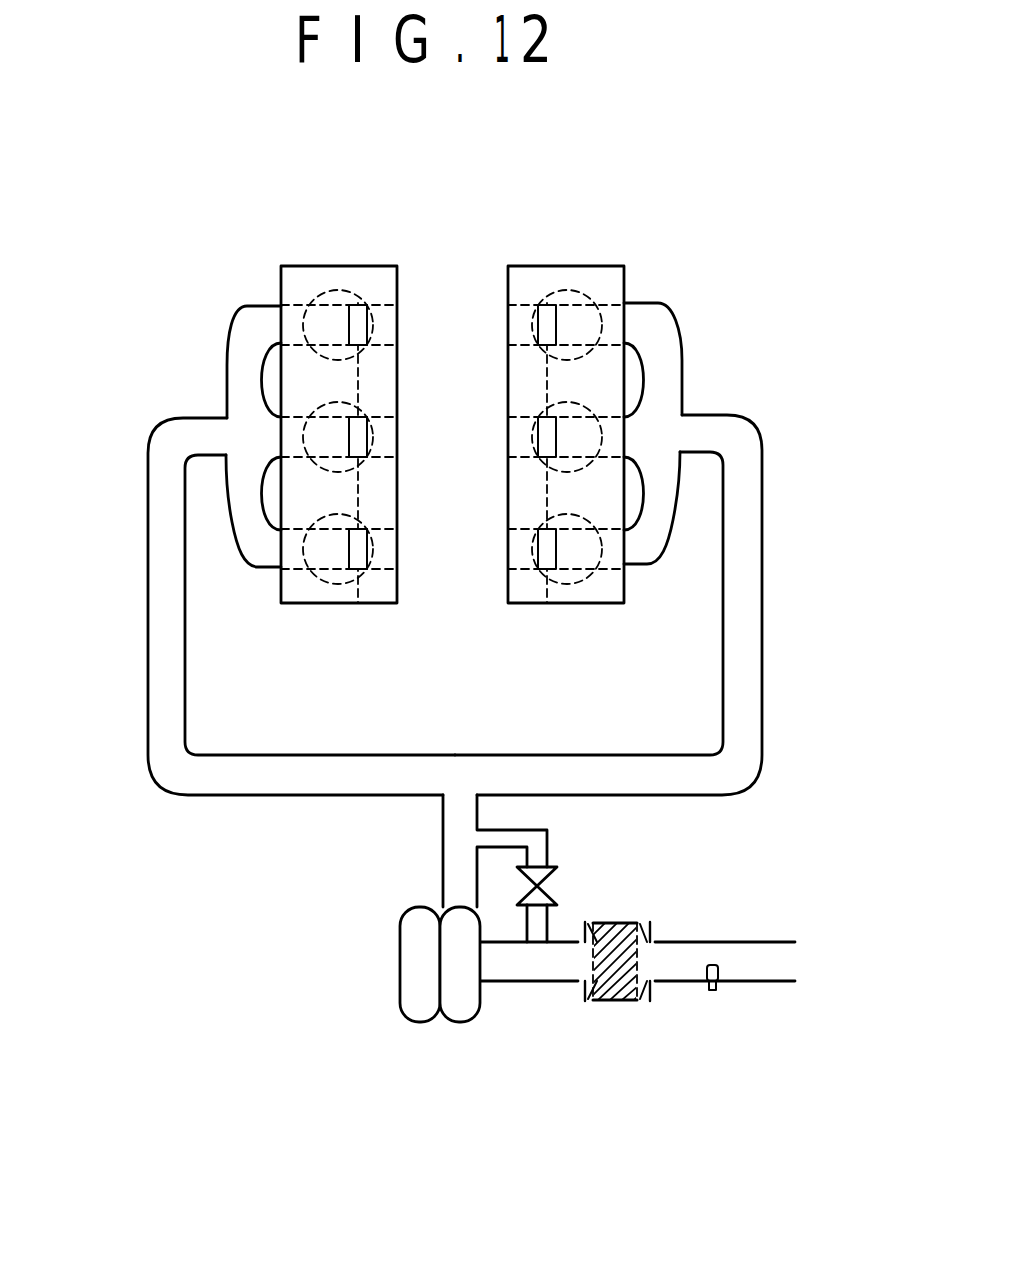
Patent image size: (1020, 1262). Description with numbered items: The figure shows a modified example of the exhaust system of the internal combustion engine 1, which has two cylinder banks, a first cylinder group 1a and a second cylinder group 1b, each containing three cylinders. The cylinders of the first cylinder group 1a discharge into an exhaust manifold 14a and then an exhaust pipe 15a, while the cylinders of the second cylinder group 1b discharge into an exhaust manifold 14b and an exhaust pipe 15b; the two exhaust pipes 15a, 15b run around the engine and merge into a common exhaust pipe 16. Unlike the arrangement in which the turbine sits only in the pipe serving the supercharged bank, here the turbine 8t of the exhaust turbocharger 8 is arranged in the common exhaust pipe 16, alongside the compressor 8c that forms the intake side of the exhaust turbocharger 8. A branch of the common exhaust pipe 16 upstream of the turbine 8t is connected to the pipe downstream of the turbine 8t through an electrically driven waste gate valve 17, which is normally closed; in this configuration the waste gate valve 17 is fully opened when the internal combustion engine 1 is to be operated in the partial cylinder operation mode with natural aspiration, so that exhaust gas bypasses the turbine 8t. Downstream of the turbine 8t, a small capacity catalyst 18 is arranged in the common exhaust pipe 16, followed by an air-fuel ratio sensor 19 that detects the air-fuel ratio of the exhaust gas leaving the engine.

The internal combustion engine 1 is at (713, 223).
The first cylinder group 1a is at (322, 453).
The second cylinder group 1b is at (580, 453).
The exhaust manifold 14a is at (227, 366).
The exhaust manifold 14b is at (681, 356).
The exhaust pipe 15a is at (146, 503).
The exhaust pipe 15b is at (763, 502).
The common exhaust pipe 16 is at (443, 812).
The waste gate valve 17 is at (558, 881).
The exhaust turbocharger 8 is at (389, 1003).
The compressor 8c is at (422, 1022).
The turbine 8t is at (460, 1022).
The small capacity catalyst 18 is at (612, 1002).
The air-fuel ratio sensor 19 is at (712, 992).